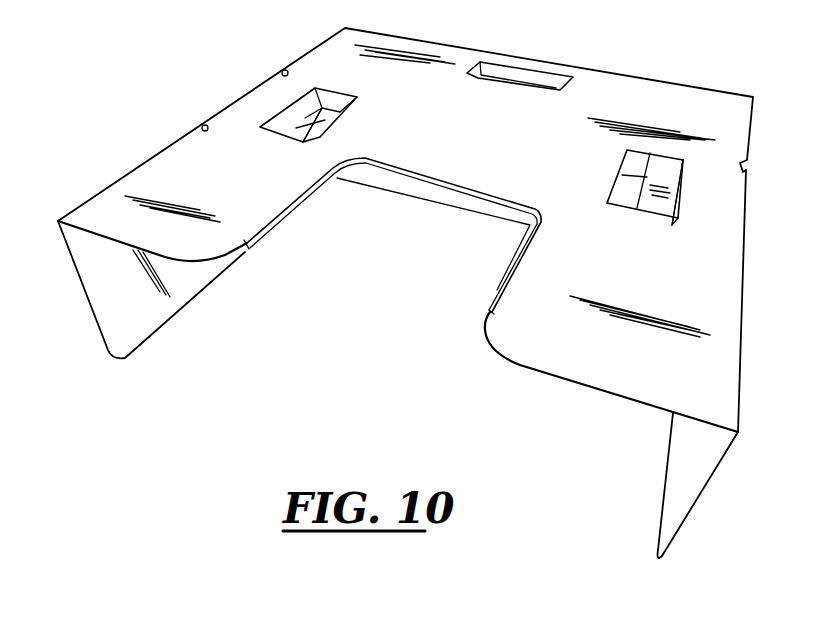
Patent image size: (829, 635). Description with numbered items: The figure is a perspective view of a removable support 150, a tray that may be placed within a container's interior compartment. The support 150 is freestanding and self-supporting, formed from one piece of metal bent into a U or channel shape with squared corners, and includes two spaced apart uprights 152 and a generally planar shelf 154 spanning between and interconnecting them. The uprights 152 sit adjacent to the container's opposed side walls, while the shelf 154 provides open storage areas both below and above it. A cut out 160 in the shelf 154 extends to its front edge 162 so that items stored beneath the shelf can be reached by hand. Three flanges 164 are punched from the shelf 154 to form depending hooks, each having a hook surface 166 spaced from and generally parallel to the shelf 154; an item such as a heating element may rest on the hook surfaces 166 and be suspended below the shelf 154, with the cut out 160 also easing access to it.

The removable support 150 is at (566, 400).
The uprights 152 is at (120, 310).
The shelf 154 is at (637, 342).
The cut out 160 is at (283, 228).
The front edge 162 is at (533, 368).
The flanges 164 is at (330, 97).
The hook surface 166 is at (302, 130).